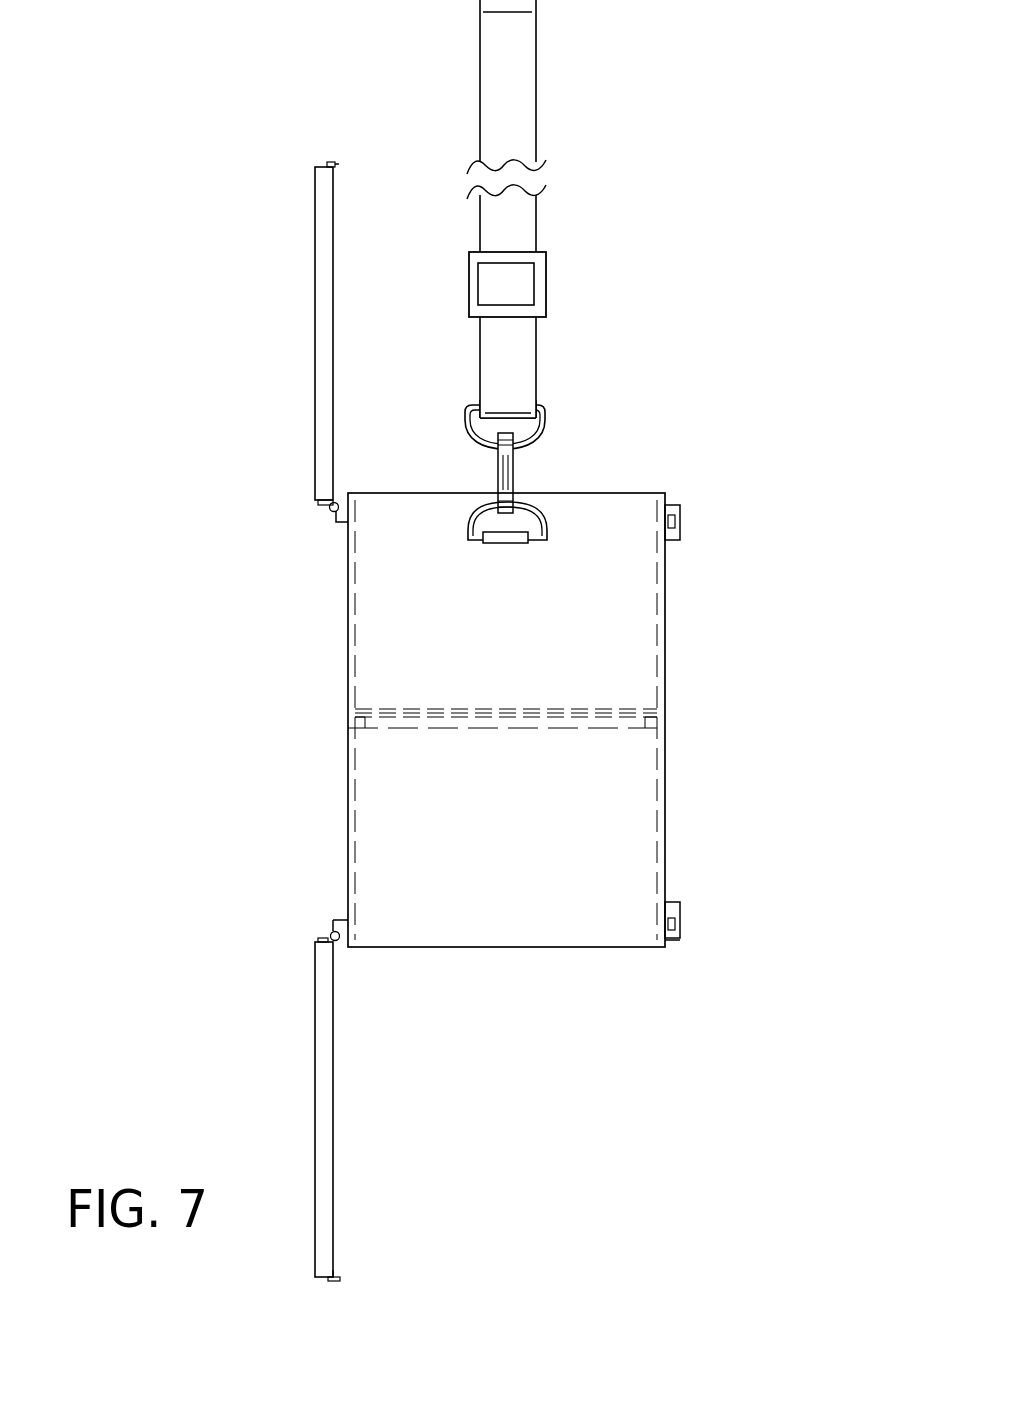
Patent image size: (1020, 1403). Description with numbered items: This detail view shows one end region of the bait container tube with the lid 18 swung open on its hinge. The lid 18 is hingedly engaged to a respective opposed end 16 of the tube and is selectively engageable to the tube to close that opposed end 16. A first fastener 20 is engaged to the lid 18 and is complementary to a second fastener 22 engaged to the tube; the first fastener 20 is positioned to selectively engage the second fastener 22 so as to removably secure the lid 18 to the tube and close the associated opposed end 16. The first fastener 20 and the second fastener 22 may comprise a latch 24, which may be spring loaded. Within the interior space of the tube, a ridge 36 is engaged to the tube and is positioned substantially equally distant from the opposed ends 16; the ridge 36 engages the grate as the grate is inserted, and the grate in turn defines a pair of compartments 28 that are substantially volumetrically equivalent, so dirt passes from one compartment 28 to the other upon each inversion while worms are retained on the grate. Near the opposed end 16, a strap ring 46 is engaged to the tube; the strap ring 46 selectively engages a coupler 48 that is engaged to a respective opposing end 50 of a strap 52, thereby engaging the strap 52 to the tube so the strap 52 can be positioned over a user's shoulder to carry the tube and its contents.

The opposed end 16 is at (425, 499).
The lid 18 is at (318, 1025).
The first fastener 20 is at (338, 1283).
The second fastener 22 is at (683, 935).
The latch 24 is at (340, 1277).
The compartment 28 is at (562, 620).
The ridge 36 is at (355, 727).
The strap ring 46 is at (534, 505).
The coupler 48 is at (550, 413).
The opposing end 50 is at (507, 414).
The strap 52 is at (512, 222).